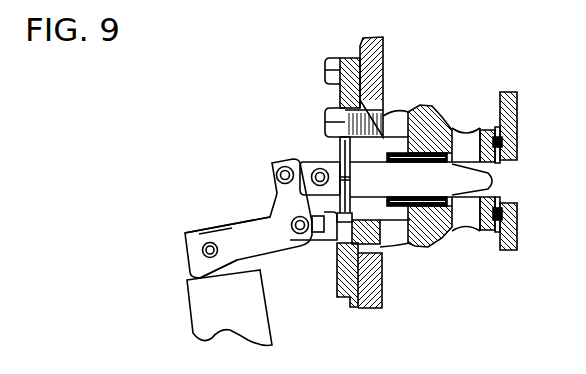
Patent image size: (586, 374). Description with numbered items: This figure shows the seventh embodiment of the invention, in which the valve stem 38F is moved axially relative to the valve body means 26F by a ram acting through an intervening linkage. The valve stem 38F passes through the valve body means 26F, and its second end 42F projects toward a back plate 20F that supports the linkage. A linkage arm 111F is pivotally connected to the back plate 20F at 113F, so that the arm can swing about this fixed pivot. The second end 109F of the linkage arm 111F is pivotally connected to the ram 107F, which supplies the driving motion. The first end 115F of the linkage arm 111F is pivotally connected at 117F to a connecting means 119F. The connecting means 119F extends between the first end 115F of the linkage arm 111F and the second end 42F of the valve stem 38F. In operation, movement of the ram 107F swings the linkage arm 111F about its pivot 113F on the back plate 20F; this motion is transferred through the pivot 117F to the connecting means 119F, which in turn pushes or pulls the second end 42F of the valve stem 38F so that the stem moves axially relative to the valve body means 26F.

The back plate 20F is at (382, 278).
The valve body means 26F is at (412, 112).
The valve stem 38F is at (408, 183).
The second end of the valve stem 42F is at (352, 168).
The ram 107F is at (259, 322).
The second end of the linkage arm 109F is at (187, 233).
The linkage arm 111F is at (250, 233).
The pivot connection to the back plate 113F is at (307, 240).
The first end of the linkage arm 115F is at (276, 172).
The pivot connection to the connecting means 117F is at (273, 175).
The connecting means 119F is at (313, 144).